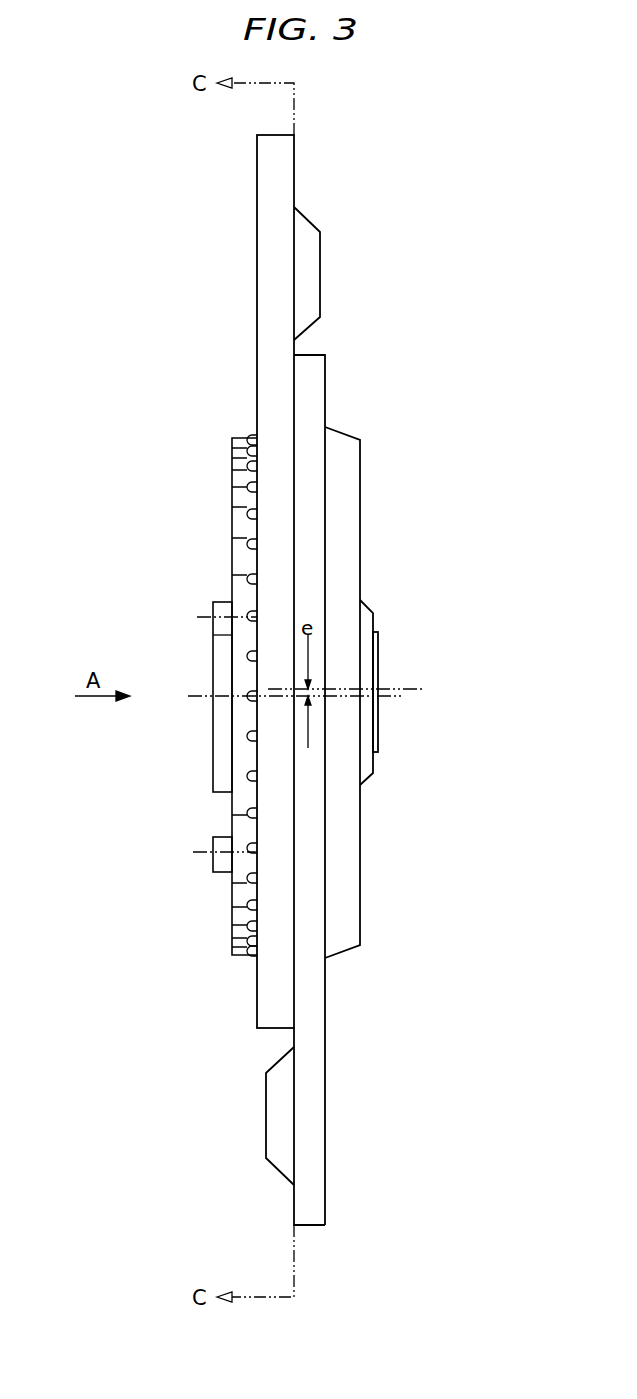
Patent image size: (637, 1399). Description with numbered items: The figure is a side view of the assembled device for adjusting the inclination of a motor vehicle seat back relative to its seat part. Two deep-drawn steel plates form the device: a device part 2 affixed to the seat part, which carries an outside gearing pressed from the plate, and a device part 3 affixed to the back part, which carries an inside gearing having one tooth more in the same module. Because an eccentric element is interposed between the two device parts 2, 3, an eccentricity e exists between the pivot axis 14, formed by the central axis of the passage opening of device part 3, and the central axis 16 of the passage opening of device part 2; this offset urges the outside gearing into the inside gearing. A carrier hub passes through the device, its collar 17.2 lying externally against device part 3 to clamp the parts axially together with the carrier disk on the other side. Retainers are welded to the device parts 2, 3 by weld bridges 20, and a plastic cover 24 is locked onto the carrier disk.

The device part 2 is at (325, 1145).
The device part 3 is at (257, 200).
The pivot axis 14 is at (386, 697).
The central axis 16 is at (408, 689).
The collar 17.2 is at (213, 758).
The weld bridges 20 is at (320, 270).
The plastic cover 24 is at (362, 527).